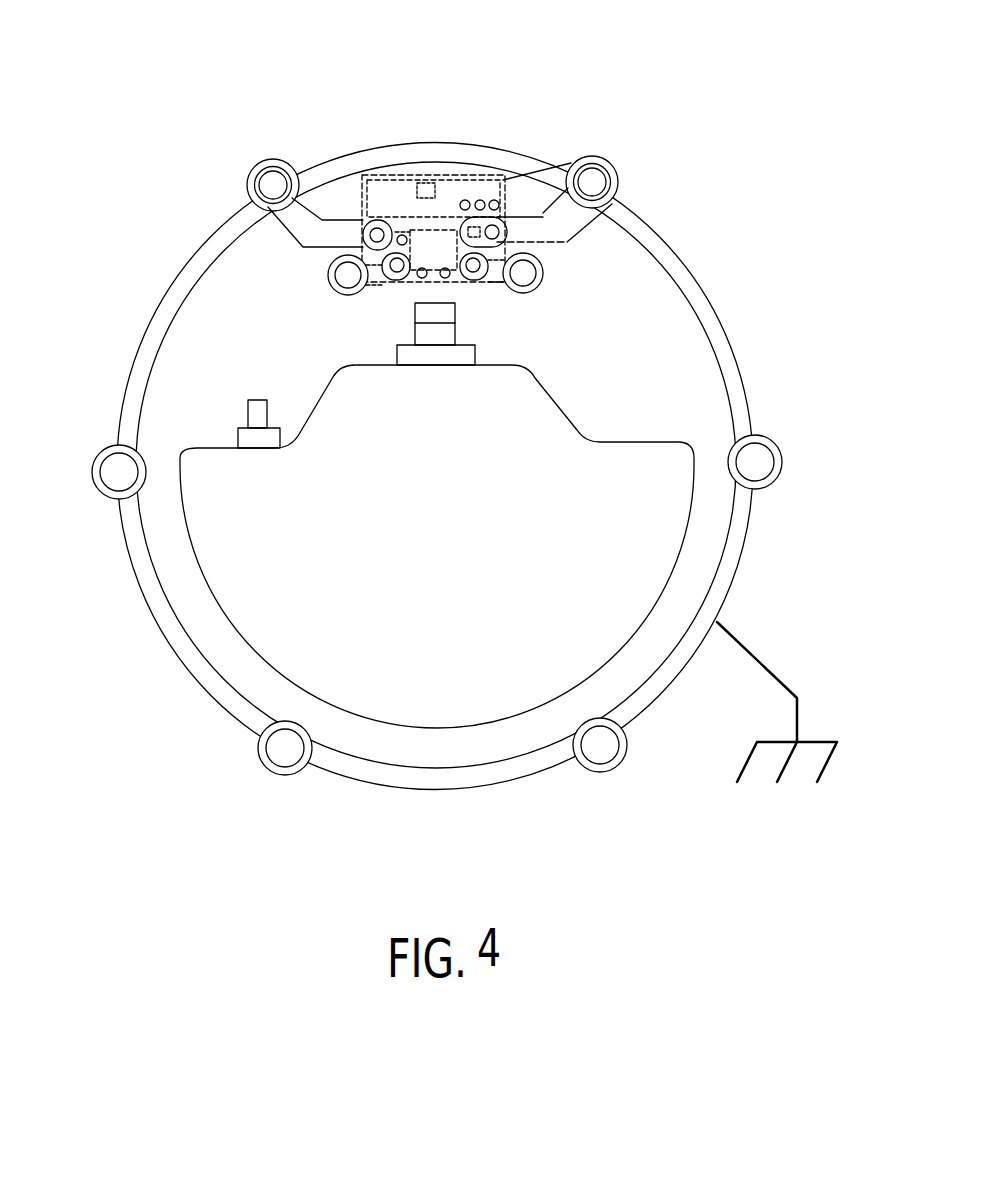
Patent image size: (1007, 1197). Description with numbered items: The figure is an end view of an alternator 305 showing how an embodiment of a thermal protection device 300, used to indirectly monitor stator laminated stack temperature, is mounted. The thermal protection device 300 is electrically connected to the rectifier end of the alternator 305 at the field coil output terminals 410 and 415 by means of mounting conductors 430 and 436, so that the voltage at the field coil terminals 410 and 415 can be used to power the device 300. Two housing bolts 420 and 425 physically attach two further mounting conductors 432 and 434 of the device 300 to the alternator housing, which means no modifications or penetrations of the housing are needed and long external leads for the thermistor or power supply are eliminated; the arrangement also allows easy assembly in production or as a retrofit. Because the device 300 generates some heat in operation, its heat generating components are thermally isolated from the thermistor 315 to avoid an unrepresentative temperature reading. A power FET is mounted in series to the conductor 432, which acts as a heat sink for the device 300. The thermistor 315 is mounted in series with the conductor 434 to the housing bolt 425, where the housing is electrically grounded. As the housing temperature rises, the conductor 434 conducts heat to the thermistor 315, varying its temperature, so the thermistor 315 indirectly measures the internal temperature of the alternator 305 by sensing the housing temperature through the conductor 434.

The thermal protection device 300 is at (487, 165).
The alternator 305 is at (760, 264).
The thermistor 315 is at (498, 220).
The field coil output terminal 410 is at (318, 277).
The field coil output terminal 415 is at (550, 277).
The housing bolt 420 is at (257, 190).
The housing bolt 425 is at (609, 166).
The mounting conductor 430 is at (371, 287).
The mounting conductor 432 is at (308, 203).
The mounting conductor 434 is at (550, 195).
The mounting conductor 436 is at (512, 250).